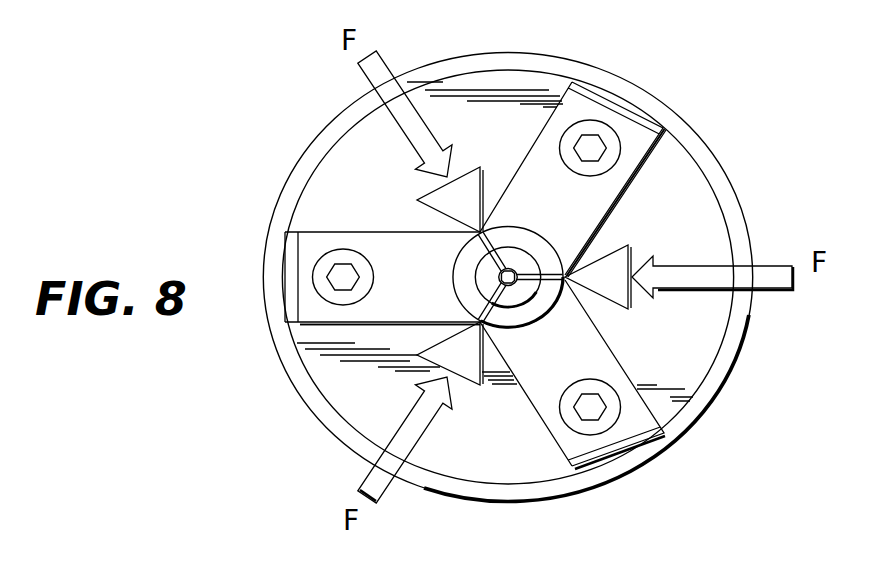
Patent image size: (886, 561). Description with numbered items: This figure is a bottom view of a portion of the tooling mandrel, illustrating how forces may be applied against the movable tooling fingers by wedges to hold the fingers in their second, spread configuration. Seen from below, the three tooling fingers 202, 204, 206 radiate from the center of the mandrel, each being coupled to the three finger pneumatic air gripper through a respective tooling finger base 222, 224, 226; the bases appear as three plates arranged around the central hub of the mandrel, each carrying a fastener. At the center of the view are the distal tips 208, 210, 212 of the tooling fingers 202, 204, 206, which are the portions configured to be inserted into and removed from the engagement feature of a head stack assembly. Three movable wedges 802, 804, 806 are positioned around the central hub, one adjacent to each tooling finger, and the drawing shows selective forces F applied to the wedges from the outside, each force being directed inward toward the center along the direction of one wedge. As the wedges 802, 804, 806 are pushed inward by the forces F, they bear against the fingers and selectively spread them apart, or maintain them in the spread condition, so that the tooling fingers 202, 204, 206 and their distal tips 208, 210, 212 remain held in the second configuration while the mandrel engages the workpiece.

The tooling finger 202 is at (470, 263).
The tooling finger 204 is at (548, 256).
The tooling finger 206 is at (553, 297).
The distal tip 208 is at (498, 279).
The distal tip 210 is at (503, 268).
The distal tip 212 is at (511, 288).
The tooling finger base 222 is at (306, 252).
The tooling finger base 224 is at (613, 123).
The tooling finger base 226 is at (595, 446).
The movable wedge 802 is at (441, 211).
The movable wedge 804 is at (628, 251).
The movable wedge 806 is at (463, 378).